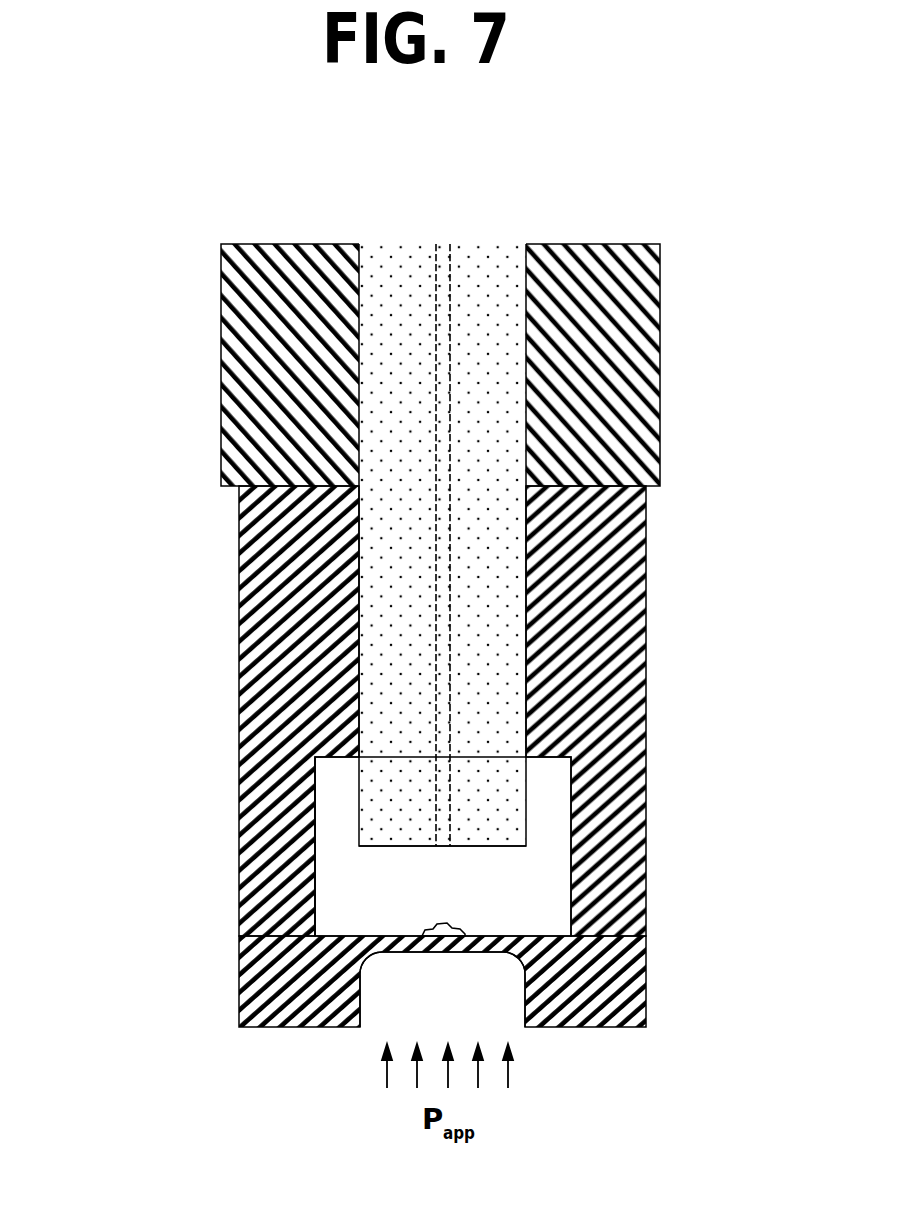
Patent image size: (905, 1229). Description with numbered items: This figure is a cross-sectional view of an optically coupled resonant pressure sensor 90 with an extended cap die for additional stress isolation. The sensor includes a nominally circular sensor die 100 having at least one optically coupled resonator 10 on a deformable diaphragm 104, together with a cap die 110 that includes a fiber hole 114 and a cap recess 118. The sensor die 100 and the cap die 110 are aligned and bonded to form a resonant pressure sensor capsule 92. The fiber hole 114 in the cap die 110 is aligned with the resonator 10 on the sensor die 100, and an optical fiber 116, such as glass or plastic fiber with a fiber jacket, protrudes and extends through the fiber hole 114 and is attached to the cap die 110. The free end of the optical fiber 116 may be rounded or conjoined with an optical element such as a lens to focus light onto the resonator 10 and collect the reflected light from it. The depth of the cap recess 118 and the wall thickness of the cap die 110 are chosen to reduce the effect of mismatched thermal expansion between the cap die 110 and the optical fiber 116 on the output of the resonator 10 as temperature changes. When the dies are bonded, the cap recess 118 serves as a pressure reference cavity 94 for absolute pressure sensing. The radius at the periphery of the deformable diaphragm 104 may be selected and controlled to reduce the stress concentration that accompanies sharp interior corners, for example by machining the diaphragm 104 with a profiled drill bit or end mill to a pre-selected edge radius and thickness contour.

The optically coupled resonant pressure sensor 90 is at (165, 505).
The resonant pressure sensor capsule 92 is at (238, 680).
The pressure reference cavity 94 is at (342, 794).
The optically coupled resonator 10 is at (430, 924).
The cap die 110 is at (647, 593).
The fiber hole 114 is at (527, 650).
The optical fiber 116 is at (527, 815).
The cap recess 118 is at (518, 902).
The sensor die 100 is at (647, 968).
The deformable diaphragm 104 is at (478, 952).